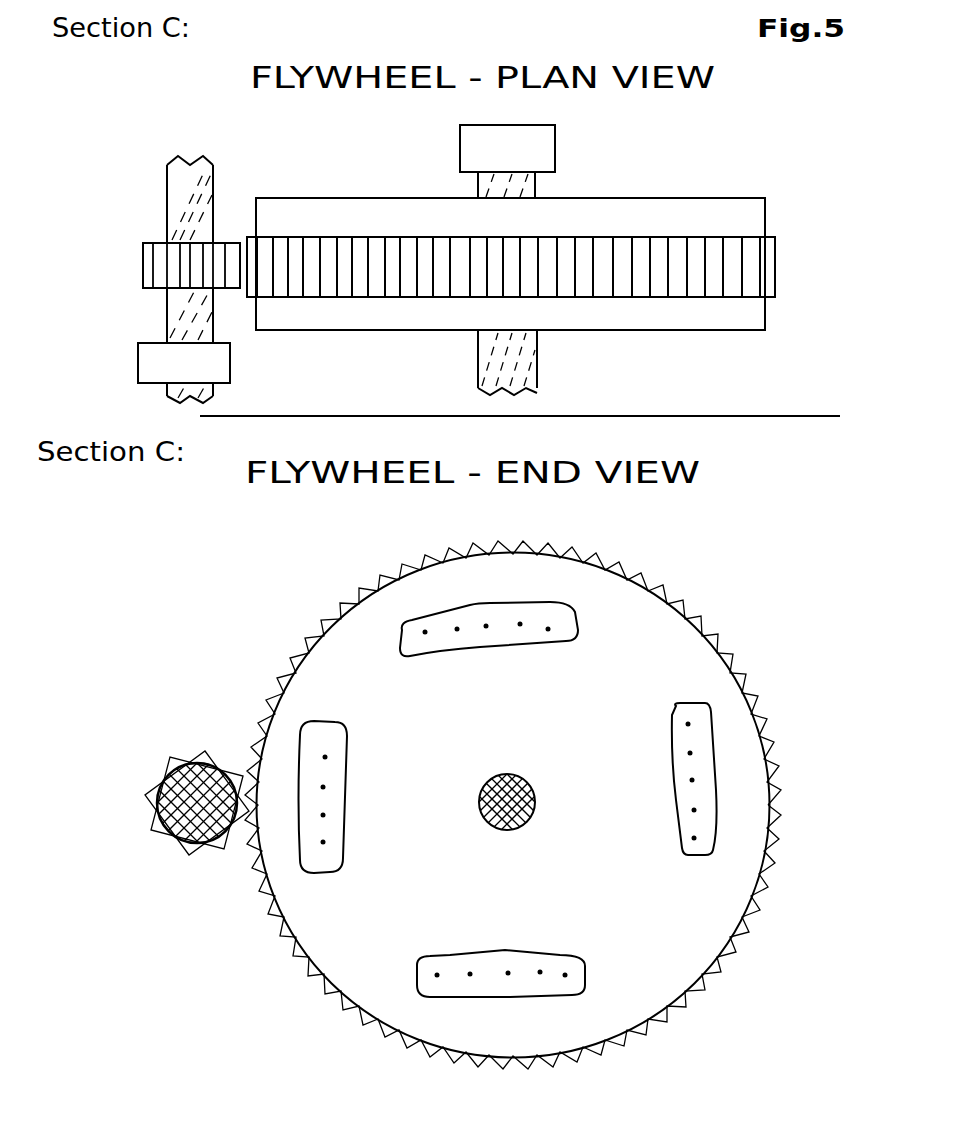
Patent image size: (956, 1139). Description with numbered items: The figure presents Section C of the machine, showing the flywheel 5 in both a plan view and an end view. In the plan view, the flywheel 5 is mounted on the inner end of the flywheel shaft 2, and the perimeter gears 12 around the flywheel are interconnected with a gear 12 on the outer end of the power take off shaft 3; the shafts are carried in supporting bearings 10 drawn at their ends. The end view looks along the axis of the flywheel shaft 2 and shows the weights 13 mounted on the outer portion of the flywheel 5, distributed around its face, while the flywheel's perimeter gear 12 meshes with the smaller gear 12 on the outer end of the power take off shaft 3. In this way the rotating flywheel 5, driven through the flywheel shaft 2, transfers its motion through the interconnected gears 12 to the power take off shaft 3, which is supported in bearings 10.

The flywheel shaft 2 is at (473, 367).
The power take off shaft 3 is at (165, 198).
The flywheel 5 is at (685, 334).
The bearings 10 is at (137, 366).
The gear 12 is at (142, 271).
The weights 13 is at (698, 863).